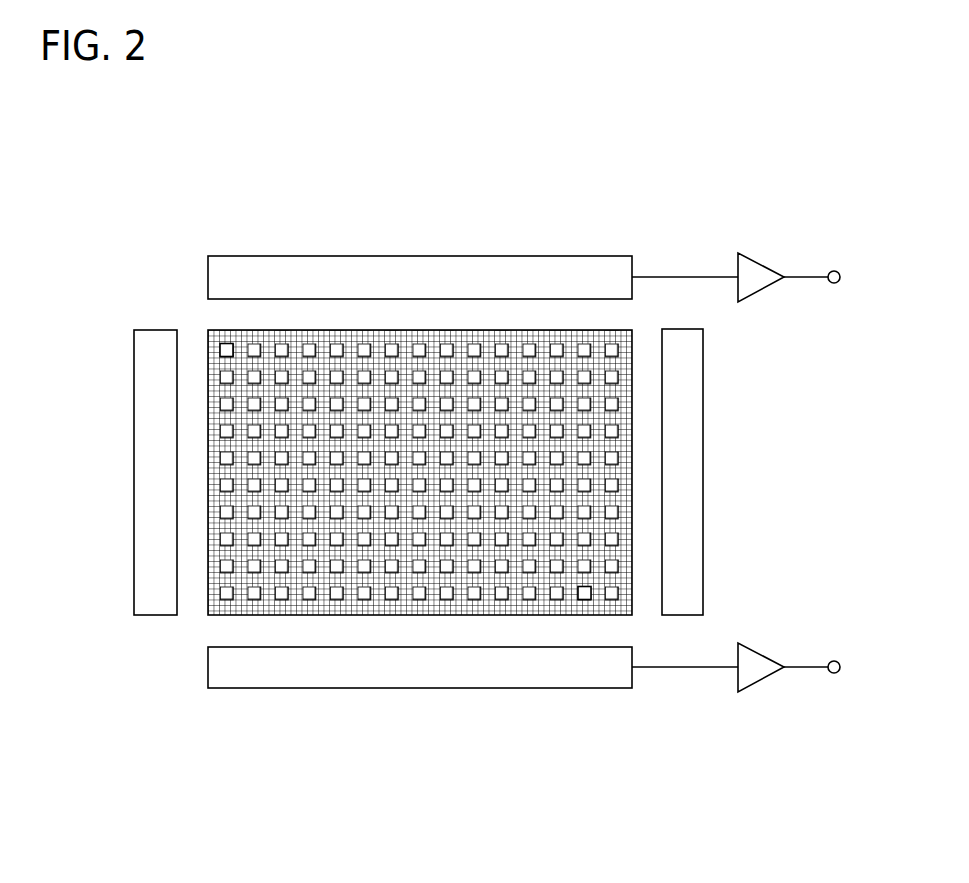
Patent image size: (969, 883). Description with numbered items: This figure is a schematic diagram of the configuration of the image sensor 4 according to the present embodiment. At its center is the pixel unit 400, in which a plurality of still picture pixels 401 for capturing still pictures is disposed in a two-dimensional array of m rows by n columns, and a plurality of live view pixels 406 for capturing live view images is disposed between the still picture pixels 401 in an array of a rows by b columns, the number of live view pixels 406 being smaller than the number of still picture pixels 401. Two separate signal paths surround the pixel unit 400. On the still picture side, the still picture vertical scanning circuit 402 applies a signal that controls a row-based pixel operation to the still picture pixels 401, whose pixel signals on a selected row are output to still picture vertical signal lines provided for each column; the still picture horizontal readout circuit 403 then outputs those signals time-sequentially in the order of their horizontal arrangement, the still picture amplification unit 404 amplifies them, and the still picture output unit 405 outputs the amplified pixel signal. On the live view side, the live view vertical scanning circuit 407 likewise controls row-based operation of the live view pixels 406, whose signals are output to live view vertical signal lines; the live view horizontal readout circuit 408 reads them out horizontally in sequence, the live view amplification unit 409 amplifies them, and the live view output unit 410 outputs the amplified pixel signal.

The image sensor 4 is at (570, 226).
The pixel unit 400 is at (632, 543).
The still picture pixels 401 is at (592, 590).
The still picture vertical scanning circuit 402 is at (134, 472).
The still picture horizontal readout circuit 403 is at (415, 689).
The still picture amplification unit 404 is at (834, 673).
The still picture output unit 405 is at (762, 651).
The live view pixels 406 is at (222, 350).
The live view vertical scanning circuit 407 is at (703, 468).
The live view horizontal readout circuit 408 is at (417, 256).
The live view amplification unit 409 is at (762, 261).
The live view output unit 410 is at (834, 283).